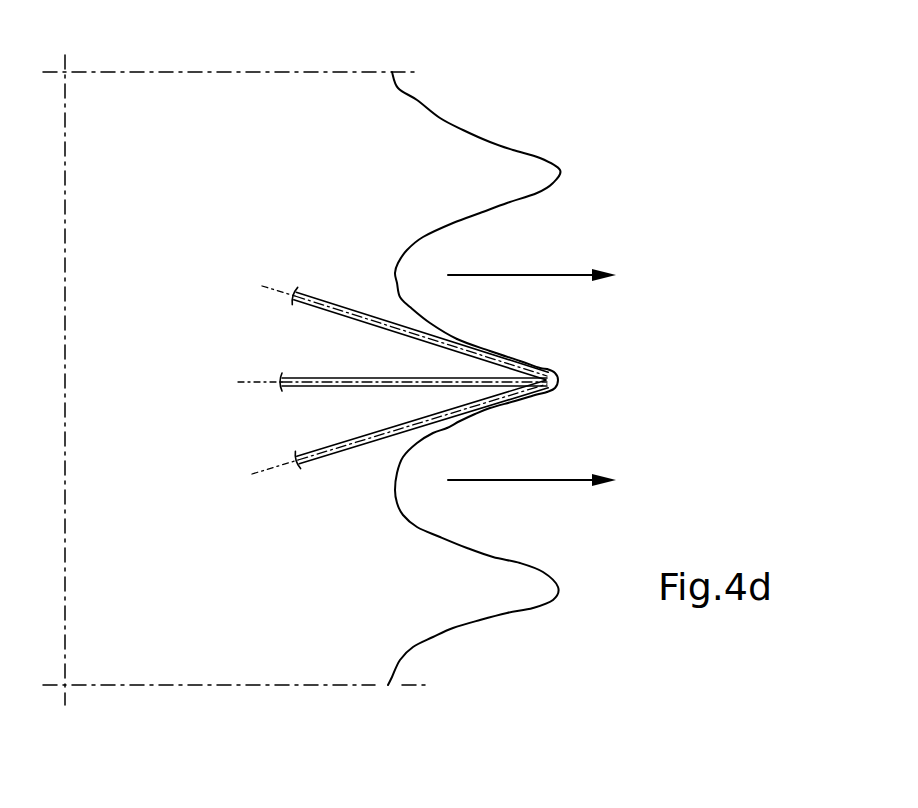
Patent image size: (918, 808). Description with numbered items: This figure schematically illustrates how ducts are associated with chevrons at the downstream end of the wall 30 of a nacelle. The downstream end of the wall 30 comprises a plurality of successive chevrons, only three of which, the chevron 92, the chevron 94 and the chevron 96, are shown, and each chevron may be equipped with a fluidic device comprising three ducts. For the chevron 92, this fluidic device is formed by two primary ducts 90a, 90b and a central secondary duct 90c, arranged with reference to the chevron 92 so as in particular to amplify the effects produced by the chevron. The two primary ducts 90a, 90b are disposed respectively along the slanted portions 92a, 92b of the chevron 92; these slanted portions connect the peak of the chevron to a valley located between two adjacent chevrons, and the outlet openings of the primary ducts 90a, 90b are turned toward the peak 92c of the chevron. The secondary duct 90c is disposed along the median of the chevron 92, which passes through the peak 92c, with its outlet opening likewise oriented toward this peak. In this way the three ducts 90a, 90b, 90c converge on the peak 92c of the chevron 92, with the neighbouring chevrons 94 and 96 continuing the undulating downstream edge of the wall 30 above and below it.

The wall 30 is at (344, 92).
The primary duct 90a is at (322, 459).
The primary duct 90b is at (318, 300).
The secondary duct 90c is at (312, 377).
The chevron 92 is at (507, 380).
The slanted portion 92a is at (494, 414).
The slanted portion 92b is at (507, 351).
The peak 92c is at (557, 380).
The chevron 94 is at (462, 146).
The chevron 96 is at (455, 634).